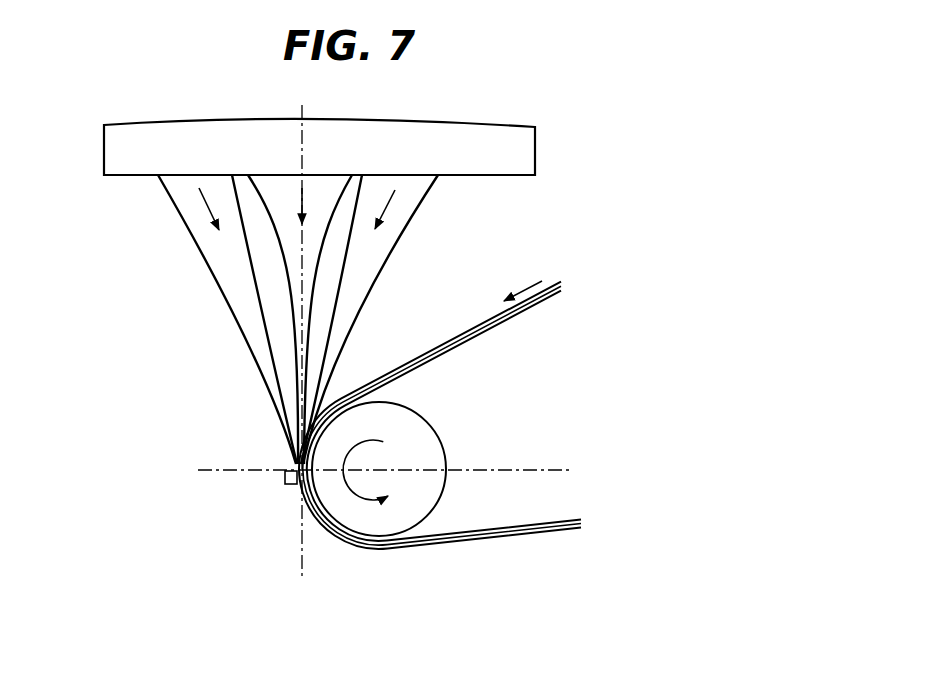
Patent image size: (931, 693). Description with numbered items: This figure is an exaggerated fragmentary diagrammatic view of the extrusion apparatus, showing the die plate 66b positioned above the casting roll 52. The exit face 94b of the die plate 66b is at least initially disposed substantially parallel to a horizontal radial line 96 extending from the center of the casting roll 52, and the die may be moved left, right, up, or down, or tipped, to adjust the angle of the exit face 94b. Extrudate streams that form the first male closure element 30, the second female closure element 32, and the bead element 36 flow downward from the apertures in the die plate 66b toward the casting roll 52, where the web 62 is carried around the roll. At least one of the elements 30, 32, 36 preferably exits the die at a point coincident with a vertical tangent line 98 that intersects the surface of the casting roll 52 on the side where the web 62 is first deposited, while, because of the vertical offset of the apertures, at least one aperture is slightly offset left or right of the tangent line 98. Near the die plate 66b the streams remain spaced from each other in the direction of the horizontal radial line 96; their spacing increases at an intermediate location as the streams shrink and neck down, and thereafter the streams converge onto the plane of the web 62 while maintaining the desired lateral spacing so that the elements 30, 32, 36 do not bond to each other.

The die plate 66b is at (500, 125).
The exit face 94b is at (505, 176).
The first male closure element 30 is at (247, 333).
The second female closure element 32 is at (374, 272).
The bead element 36 is at (307, 313).
The web 62 is at (522, 311).
The casting roll 52 is at (438, 502).
The horizontal radial line 96 is at (441, 460).
The vertical tangent line 98 is at (302, 553).